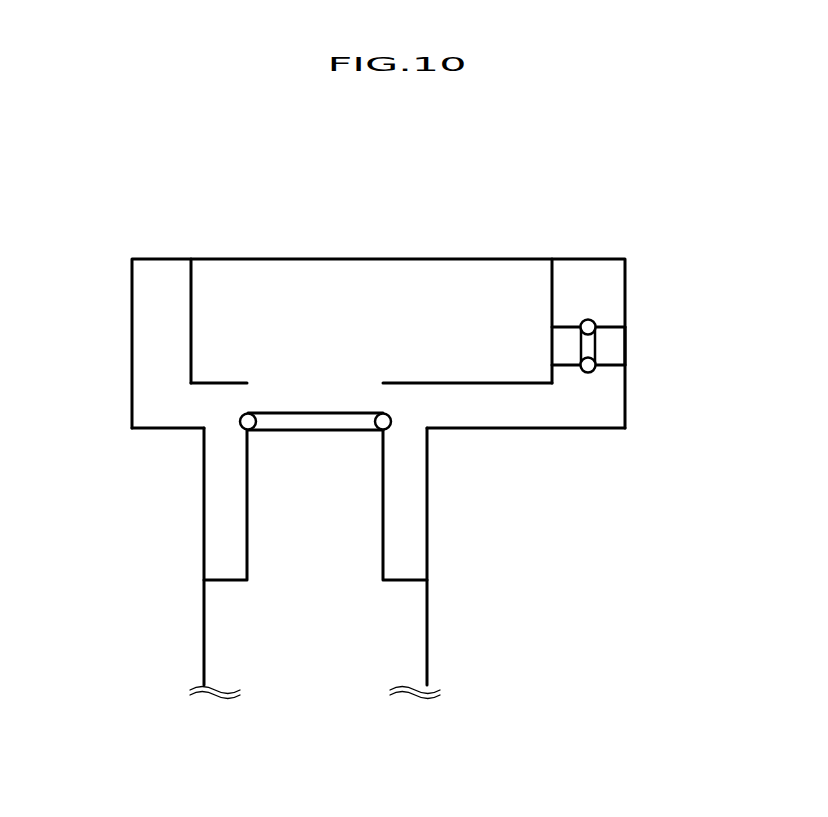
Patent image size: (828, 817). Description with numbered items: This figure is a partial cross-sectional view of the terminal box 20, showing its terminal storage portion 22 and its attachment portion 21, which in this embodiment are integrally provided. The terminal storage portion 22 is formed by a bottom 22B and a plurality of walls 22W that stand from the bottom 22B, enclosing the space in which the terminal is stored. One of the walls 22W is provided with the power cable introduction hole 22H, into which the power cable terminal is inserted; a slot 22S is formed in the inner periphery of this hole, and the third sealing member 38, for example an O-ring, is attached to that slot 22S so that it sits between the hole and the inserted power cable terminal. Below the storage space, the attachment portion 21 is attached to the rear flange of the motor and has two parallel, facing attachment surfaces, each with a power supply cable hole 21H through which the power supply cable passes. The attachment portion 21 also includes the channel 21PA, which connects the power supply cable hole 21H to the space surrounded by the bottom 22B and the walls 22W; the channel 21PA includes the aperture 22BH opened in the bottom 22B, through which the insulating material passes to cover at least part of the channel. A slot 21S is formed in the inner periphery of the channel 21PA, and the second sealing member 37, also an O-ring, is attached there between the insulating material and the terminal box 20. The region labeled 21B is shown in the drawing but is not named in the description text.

The terminal box 20 is at (118, 207).
The terminal storage portion 22 is at (645, 393).
The wall 22W is at (319, 275).
The bottom 22B is at (553, 410).
The aperture 22BH is at (343, 385).
The power cable introduction hole 22H is at (615, 330).
The slot 22S is at (603, 349).
The third sealing member 38 is at (579, 339).
The attachment portion 21 is at (412, 548).
The bottom portion 21B is at (172, 410).
The channel 21PA is at (293, 548).
The power supply cable hole 21H is at (233, 628).
The second sealing member 37 is at (317, 432).
The slot 21S is at (243, 412).